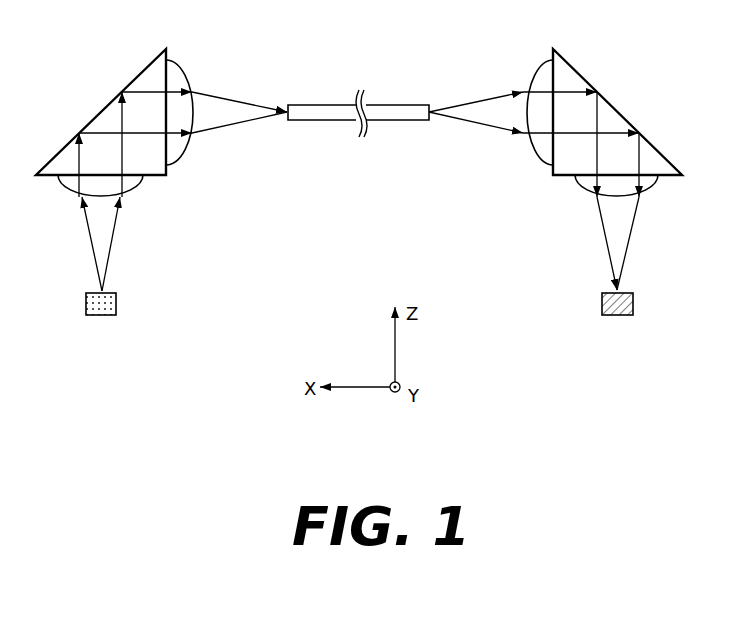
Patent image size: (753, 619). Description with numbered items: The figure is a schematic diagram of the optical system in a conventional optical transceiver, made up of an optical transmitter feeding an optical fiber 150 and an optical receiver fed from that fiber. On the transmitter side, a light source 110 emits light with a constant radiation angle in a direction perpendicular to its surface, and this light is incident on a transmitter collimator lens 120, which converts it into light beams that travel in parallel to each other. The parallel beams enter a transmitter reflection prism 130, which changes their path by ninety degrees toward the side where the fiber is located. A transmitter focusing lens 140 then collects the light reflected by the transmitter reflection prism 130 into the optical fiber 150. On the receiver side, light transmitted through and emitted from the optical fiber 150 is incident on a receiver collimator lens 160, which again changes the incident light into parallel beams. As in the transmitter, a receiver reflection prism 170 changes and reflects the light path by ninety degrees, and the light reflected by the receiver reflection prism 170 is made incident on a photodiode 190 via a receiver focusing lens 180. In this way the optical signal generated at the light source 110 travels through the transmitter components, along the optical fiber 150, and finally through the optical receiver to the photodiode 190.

The light source 110 is at (83, 303).
The transmitter collimator lens 120 is at (62, 188).
The transmitter reflection prism 130 is at (98, 112).
The transmitter focusing lens 140 is at (185, 63).
The optical fiber 150 is at (395, 103).
The receiver collimator lens 160 is at (537, 65).
The receiver reflection prism 170 is at (622, 110).
The receiver focusing lens 180 is at (658, 188).
The photodiode 190 is at (635, 303).